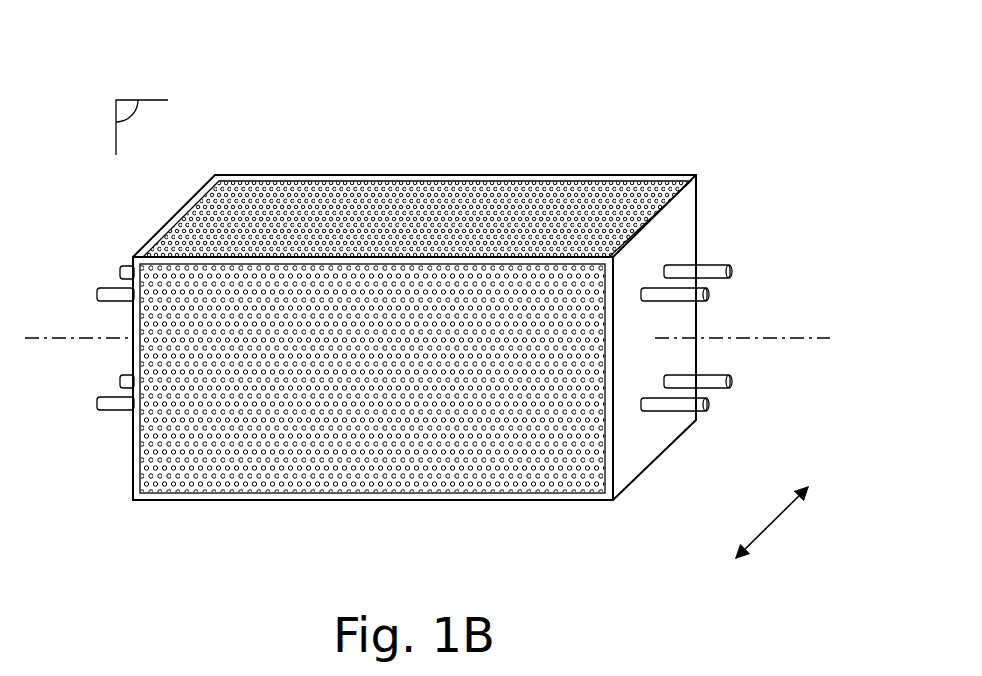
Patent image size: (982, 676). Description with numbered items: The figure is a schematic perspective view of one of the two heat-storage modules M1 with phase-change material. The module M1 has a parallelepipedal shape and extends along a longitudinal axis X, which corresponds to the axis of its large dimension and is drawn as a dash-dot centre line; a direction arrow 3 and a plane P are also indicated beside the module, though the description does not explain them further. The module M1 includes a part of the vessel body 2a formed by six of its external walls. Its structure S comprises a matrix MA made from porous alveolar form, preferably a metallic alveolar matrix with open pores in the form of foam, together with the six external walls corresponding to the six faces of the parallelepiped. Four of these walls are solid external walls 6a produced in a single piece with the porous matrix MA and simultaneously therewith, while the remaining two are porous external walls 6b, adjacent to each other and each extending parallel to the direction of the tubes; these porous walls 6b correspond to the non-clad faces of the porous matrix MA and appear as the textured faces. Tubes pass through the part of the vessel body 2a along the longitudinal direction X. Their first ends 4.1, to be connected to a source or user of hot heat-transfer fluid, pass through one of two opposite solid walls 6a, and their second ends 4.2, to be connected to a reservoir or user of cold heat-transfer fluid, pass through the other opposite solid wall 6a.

The heat-storage module M1 is at (615, 139).
The solid external wall 6a is at (185, 204).
The porous external wall 6b is at (517, 222).
The matrix MA is at (368, 207).
The structure S is at (418, 172).
The part of the vessel body 2a is at (481, 504).
The plane P is at (125, 102).
The first end of the tubes 4.1 is at (120, 272).
The second end of the tubes 4.2 is at (709, 295).
The longitudinal axis X is at (780, 336).
The direction arrow 3 is at (776, 527).